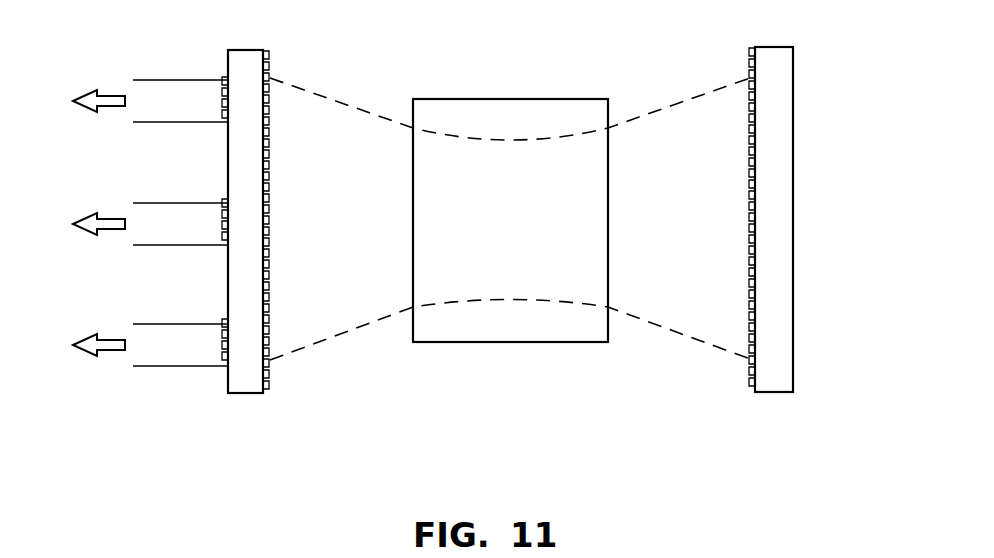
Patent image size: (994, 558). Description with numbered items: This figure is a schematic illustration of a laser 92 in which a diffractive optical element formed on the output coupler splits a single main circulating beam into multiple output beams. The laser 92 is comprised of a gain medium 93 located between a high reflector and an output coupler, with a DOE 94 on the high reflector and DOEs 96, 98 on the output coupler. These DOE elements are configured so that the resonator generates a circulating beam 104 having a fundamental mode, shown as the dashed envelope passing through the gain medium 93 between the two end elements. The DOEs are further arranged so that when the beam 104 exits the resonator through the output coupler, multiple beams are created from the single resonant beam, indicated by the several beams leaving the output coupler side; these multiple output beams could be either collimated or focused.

The laser 92 is at (580, 55).
The gain medium 93 is at (523, 342).
The DOE on the high reflector 94 is at (753, 378).
The DOE on the output coupler 96 is at (270, 375).
The DOE on the output coupler 98 is at (228, 380).
The circulating beam 104 is at (693, 333).